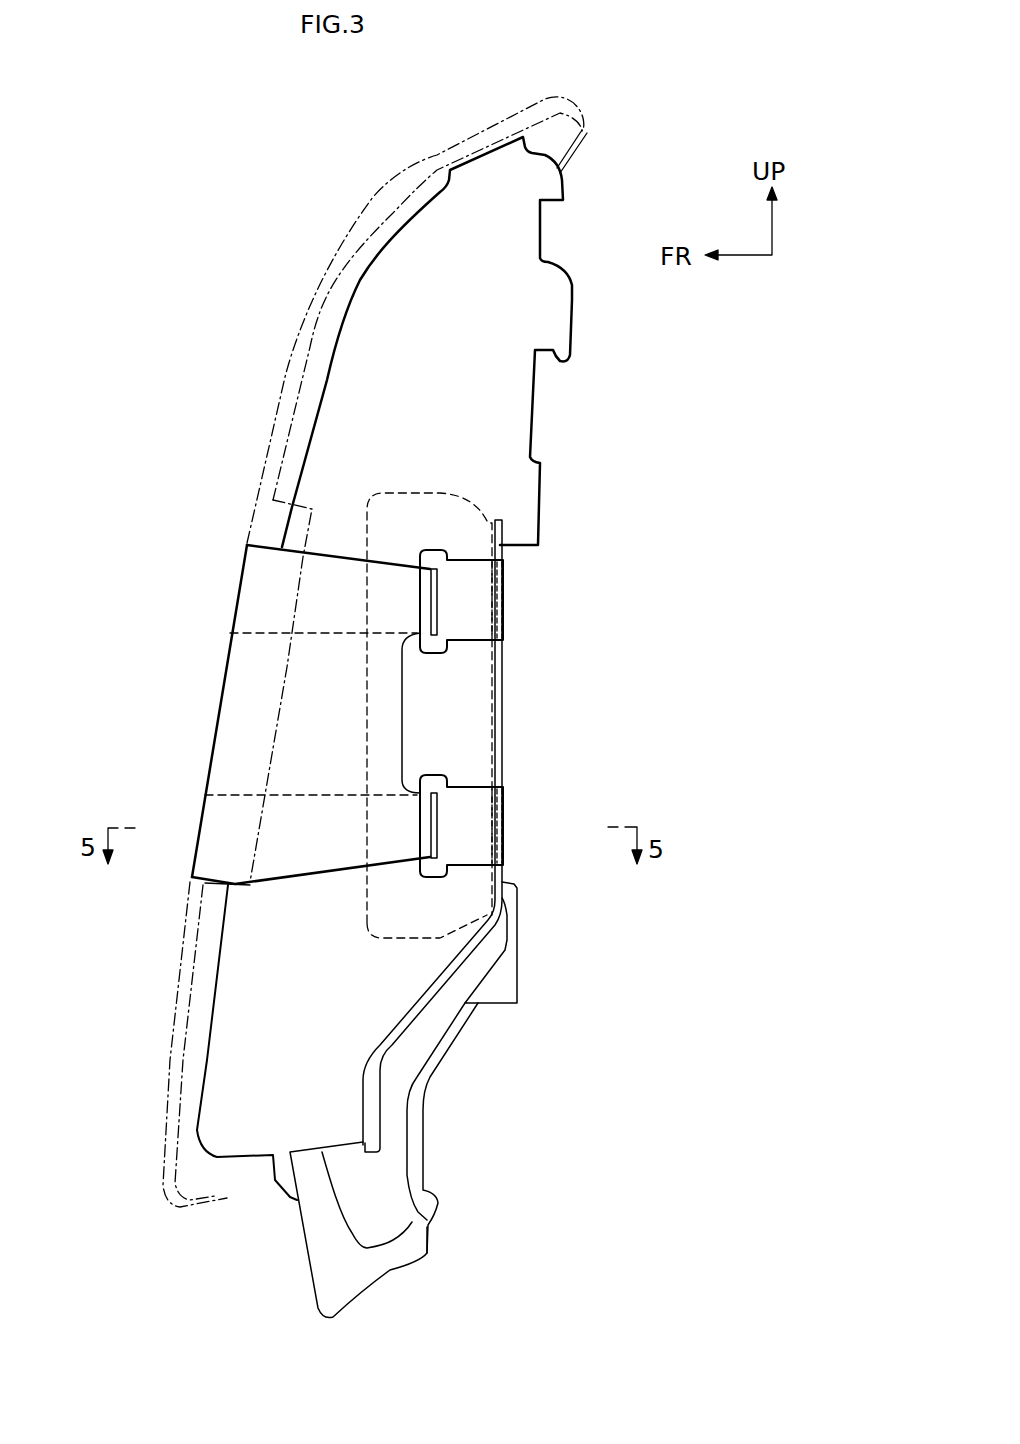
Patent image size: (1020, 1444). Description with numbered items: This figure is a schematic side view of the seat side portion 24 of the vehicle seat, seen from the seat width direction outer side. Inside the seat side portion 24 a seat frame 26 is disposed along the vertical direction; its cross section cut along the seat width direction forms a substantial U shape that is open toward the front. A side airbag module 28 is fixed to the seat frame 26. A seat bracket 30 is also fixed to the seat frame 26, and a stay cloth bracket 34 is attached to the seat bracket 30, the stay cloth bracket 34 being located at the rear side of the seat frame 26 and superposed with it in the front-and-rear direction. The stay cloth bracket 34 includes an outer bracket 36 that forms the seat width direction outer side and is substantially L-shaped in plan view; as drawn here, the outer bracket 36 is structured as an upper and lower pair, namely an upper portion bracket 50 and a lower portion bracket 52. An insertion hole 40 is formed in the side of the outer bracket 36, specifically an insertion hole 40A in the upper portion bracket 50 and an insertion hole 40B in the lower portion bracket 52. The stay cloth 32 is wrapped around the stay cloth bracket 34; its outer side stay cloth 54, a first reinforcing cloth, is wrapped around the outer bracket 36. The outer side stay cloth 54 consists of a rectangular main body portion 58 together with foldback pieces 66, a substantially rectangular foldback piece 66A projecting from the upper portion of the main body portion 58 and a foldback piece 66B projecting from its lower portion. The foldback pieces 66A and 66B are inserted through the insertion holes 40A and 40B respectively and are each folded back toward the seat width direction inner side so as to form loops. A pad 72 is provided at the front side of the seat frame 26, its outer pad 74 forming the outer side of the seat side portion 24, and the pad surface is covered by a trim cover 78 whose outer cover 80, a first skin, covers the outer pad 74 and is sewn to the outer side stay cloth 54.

The seat side portion 24 is at (239, 301).
The seat frame 26 is at (503, 427).
The side airbag module 28 is at (455, 523).
The seat bracket 30 is at (500, 703).
The stay cloth 32 is at (267, 707).
The stay cloth bracket 34 is at (518, 859).
The outer bracket 36 is at (527, 713).
The insertion hole 40 is at (395, 717).
The insertion hole 40A is at (428, 598).
The insertion hole 40B is at (430, 828).
The upper portion bracket 50 is at (480, 595).
The lower portion bracket 52 is at (480, 818).
The outer side stay cloth 54 is at (216, 649).
The main body portion 58 is at (235, 727).
The foldback pieces 66 is at (193, 870).
The foldback piece 66A is at (263, 583).
The foldback piece 66B is at (220, 848).
The pad 72 is at (364, 656).
The outer pad 74 is at (283, 487).
The trim cover 78 is at (373, 652).
The outer cover 80 is at (283, 427).